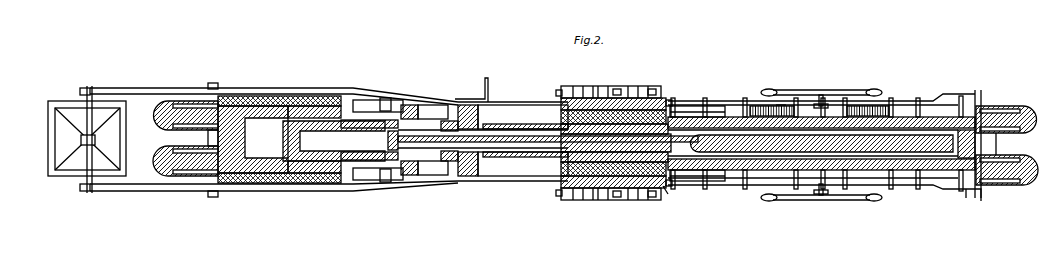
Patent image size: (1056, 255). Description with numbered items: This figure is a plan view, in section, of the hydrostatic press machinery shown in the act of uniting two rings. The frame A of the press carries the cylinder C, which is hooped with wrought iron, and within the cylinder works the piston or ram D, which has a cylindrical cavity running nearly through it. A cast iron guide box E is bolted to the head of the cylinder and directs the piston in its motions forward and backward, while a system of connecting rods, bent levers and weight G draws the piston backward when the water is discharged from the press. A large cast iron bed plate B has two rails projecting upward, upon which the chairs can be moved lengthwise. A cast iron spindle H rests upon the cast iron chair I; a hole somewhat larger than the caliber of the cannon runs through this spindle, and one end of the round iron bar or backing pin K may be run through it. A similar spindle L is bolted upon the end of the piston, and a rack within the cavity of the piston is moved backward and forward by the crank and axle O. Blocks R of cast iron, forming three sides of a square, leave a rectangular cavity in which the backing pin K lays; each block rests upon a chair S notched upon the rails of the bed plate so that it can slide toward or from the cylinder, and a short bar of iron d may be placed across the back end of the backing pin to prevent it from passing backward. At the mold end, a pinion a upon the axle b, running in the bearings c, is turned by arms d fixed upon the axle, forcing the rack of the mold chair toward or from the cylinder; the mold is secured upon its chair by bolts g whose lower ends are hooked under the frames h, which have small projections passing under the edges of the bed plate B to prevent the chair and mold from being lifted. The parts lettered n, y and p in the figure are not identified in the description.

The system of connecting rods, bent levers, and weight G is at (253, 143).
The frame A is at (595, 143).
The bed plate B is at (597, 143).
The cylinder C is at (279, 139).
The piston or ram D is at (425, 140).
The guide box E is at (400, 140).
The spindle L is at (513, 141).
The crank and axle O is at (471, 89).
The backing pin K is at (673, 143).
The bolts g is at (616, 142).
The frames h is at (566, 147).
The nuts n is at (641, 146).
The pin y is at (661, 198).
The chair I is at (697, 143).
The blocks R is at (821, 141).
The chairs S is at (817, 143).
The bearings c is at (819, 148).
The pinion a is at (780, 101).
The arms d is at (821, 145).
The axle b is at (821, 145).
The spindle H is at (961, 144).
The bracket foot p is at (969, 198).